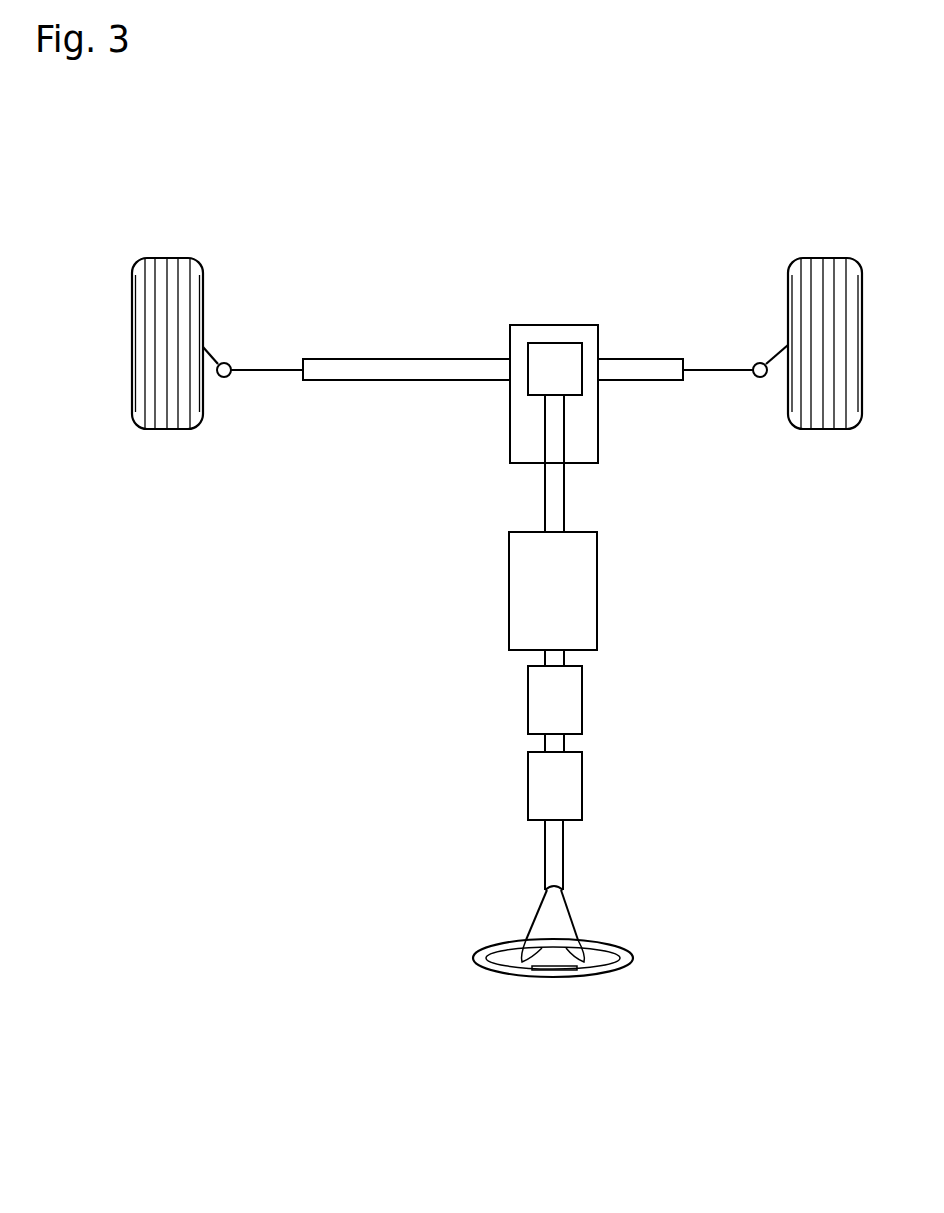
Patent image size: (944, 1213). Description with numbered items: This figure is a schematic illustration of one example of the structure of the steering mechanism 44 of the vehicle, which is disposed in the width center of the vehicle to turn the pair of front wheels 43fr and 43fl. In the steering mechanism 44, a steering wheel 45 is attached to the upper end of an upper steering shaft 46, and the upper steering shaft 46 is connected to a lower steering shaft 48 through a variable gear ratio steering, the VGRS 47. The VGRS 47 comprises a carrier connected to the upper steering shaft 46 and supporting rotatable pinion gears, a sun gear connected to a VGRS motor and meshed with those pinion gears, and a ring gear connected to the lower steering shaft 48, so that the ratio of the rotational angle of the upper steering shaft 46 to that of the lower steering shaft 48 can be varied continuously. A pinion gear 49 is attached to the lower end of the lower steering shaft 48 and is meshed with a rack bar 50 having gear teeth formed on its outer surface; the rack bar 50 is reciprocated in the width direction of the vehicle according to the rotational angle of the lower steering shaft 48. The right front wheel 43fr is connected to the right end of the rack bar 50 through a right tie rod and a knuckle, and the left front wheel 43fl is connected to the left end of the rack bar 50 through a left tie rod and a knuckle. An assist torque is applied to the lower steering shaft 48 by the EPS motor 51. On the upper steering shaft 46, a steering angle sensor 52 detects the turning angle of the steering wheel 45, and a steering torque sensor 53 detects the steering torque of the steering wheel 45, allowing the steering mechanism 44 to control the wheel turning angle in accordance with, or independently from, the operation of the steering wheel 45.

The left front wheel 43fl is at (173, 258).
The right front wheel 43fr is at (830, 258).
The steering mechanism 44 is at (386, 712).
The steering wheel 45 is at (560, 980).
The upper steering shaft 46 is at (562, 857).
The variable gear ratio steering (VGRS) 47 is at (585, 591).
The lower steering shaft 48 is at (555, 489).
The pinion gear 49 is at (555, 343).
The rack bar 50 is at (430, 358).
The electric power steering motor (EPS motor) 51 is at (588, 422).
The steering angle sensor 52 is at (575, 781).
The steering torque sensor 53 is at (575, 697).